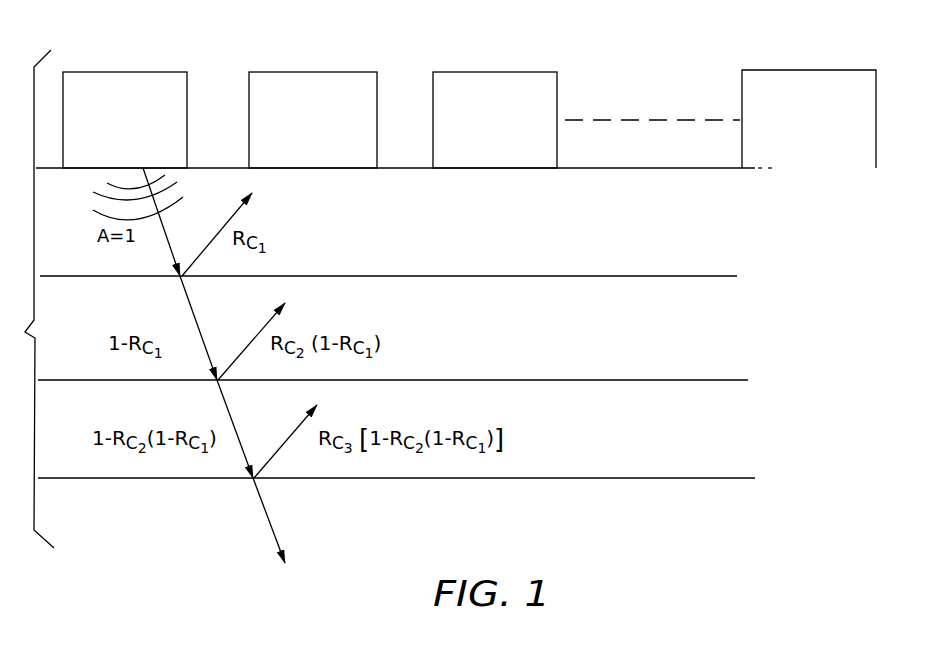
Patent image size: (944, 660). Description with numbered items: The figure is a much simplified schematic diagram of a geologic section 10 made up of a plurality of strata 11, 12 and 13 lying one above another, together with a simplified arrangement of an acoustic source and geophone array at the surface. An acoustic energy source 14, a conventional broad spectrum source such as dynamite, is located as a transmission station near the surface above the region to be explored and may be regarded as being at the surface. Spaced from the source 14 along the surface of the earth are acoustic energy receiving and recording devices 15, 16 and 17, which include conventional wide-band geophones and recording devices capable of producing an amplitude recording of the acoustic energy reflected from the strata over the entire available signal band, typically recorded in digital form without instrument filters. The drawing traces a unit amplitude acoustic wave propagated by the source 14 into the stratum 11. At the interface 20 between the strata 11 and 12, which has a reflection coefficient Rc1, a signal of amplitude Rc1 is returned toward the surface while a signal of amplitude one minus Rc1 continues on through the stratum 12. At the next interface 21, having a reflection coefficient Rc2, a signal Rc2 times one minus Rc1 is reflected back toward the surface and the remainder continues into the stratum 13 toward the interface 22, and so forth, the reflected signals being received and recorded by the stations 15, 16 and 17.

The geologic section 10 is at (28, 340).
The stratum 11 is at (580, 241).
The stratum 12 is at (578, 343).
The stratum 13 is at (606, 448).
The acoustic energy source 14 is at (124, 72).
The acoustic energy receiving and recording device 15 is at (302, 72).
The acoustic energy receiving and recording device 16 is at (470, 72).
The acoustic energy receiving and recording device 17 is at (769, 70).
The interface 20 is at (360, 276).
The interface 21 is at (423, 380).
The interface 22 is at (607, 478).